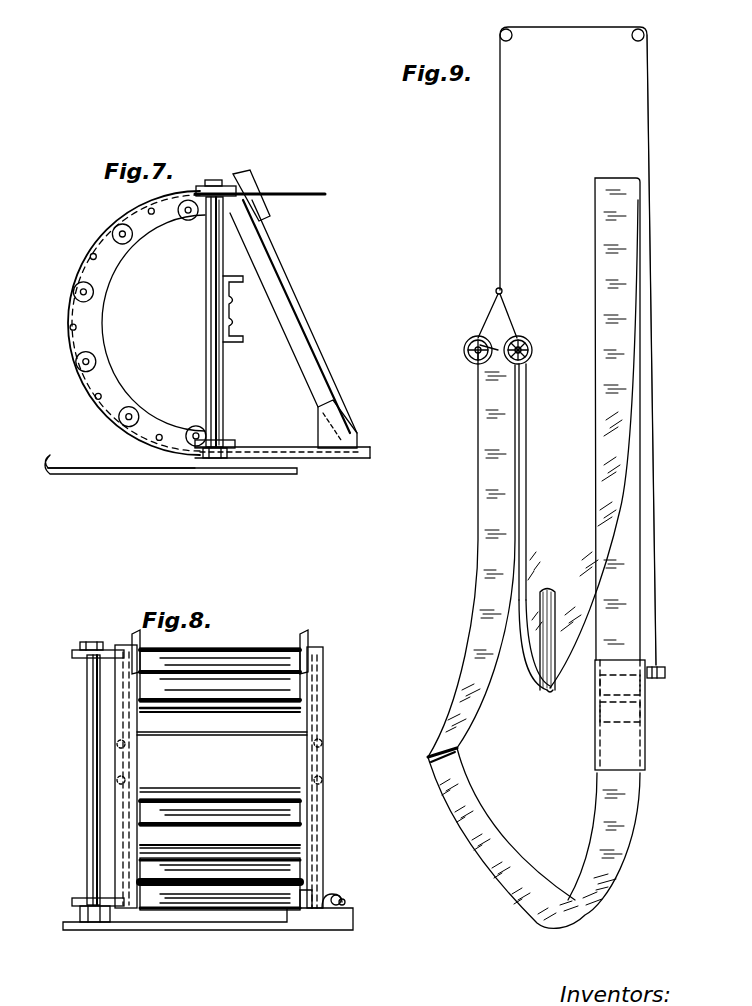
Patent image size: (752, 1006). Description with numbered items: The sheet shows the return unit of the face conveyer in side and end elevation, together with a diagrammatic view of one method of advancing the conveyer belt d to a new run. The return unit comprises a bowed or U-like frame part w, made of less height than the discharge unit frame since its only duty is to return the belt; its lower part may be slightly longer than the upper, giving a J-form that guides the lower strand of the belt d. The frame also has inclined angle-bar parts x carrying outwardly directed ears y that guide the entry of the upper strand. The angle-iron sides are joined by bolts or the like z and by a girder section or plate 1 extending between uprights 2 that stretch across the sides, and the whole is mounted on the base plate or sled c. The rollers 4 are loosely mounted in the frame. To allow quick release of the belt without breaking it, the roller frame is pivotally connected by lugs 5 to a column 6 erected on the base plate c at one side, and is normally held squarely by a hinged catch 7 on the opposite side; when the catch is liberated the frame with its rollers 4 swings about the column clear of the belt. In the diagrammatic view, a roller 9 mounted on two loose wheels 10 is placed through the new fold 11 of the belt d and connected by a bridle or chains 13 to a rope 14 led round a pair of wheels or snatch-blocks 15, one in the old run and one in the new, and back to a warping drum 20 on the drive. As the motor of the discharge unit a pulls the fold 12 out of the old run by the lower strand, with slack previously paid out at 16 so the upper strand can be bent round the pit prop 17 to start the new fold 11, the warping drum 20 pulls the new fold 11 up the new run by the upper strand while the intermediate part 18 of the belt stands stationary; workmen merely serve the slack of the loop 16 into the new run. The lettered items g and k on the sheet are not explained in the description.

In FIG. 7, the girder section or plate 1 is at (236, 330).
In FIG. 8, the girder section or plate 1 is at (222, 751).
In FIG. 7, the uprights 2 is at (223, 405).
In FIG. 8, the uprights 2 is at (116, 830).
In FIG. 7, the rollers 4 is at (128, 244).
In FIG. 8, the rollers 4 is at (253, 662).
In FIG. 7, the lugs 5 is at (260, 213).
In FIG. 8, the lugs 5 is at (74, 655).
In FIG. 7, the column 6 is at (206, 331).
In FIG. 8, the column 6 is at (88, 713).
In FIG. 8, the hinged catch 7 is at (326, 906).
In FIG. 9, the roller 9 is at (485, 360).
In FIG. 9, the loose wheels 10 is at (470, 342).
In FIG. 9, the new fold 11 is at (524, 406).
In FIG. 9, the fold 12 is at (630, 242).
In FIG. 9, the bridle, chains, or the like 13 is at (493, 302).
In FIG. 9, the rope 14 is at (500, 140).
In FIG. 9, the wheels, snatch-blocks or the like 15 is at (632, 38).
In FIG. 9, the slack or loop 16 is at (532, 872).
In FIG. 9, the pit prop 17 is at (552, 598).
In FIG. 9, the intermediate part of the belt 18 is at (597, 467).
In FIG. 9, the warping drum 20 is at (660, 672).
In FIG. 9, the discharge unit a is at (647, 702).
In FIG. 7, the base plate, sled or the like c is at (90, 468).
In FIG. 8, the base plate, sled or the like c is at (168, 931).
In FIG. 7, the conveyer belt d is at (357, 482).
In FIG. 8, the conveyer belt d is at (238, 653).
In FIG. 9, the conveyer belt d is at (655, 518).
In FIG. 9, the guide box g is at (647, 722).
In FIG. 9, the box slots k is at (602, 684).
In FIG. 7, the frame part w is at (86, 323).
In FIG. 7, the inclined angle-bar parts x is at (312, 343).
In FIG. 8, the inclined angle-bar parts x is at (116, 792).
In FIG. 7, the outwardly directed ears y is at (241, 185).
In FIG. 8, the outwardly directed ears y is at (131, 640).
In FIG. 7, the bolts or the like z is at (152, 216).
In FIG. 8, the bolts or the like z is at (246, 716).